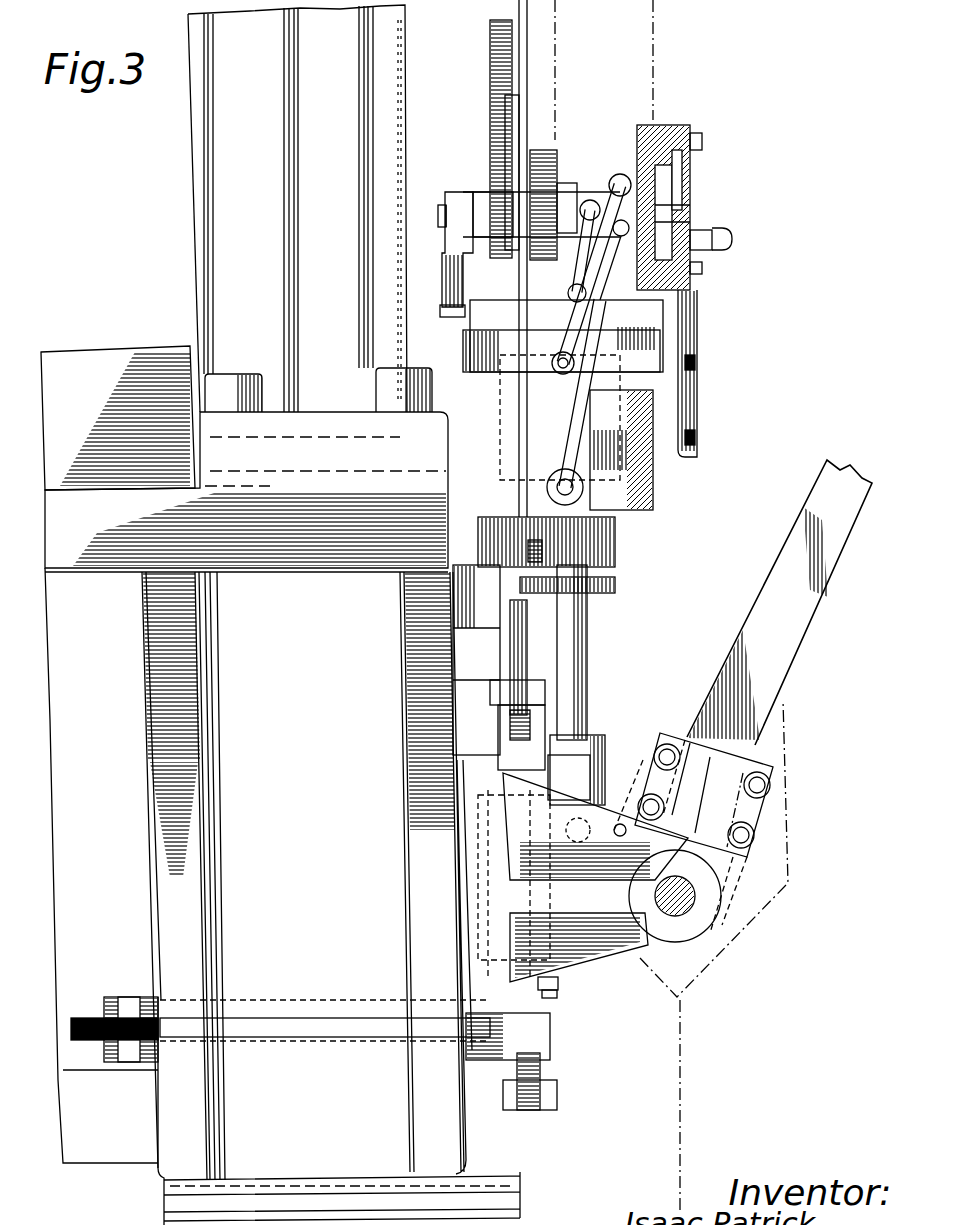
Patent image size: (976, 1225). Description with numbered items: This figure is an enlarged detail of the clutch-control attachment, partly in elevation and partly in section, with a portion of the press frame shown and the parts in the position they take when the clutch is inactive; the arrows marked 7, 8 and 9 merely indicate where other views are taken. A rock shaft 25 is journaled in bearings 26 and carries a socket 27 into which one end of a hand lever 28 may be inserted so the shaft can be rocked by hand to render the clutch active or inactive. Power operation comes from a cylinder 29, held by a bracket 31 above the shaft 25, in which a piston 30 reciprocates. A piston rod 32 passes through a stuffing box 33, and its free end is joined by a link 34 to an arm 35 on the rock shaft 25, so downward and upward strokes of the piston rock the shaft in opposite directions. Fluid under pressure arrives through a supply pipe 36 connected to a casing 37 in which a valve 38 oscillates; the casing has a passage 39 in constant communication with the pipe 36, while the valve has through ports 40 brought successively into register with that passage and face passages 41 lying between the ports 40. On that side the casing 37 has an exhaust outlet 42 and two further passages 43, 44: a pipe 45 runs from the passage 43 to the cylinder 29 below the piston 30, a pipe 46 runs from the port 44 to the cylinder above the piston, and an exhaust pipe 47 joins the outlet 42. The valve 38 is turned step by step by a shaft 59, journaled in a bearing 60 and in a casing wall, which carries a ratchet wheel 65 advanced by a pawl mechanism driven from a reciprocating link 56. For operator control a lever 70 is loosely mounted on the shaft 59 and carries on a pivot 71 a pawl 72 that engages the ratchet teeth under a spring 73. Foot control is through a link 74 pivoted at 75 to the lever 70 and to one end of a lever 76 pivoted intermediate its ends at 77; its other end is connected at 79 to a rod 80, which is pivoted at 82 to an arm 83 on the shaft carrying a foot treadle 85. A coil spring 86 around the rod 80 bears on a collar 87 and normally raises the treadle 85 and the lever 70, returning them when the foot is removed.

The section line 7- 7 is at (440, 222).
The section line 8- 8 is at (540, 19).
The section line 9- 9 is at (642, 32).
The rock shaft 25 is at (690, 905).
The bearings 26 is at (590, 960).
The socket 27 is at (775, 805).
The hand lever 28 is at (760, 640).
The cylinder 29 is at (540, 330).
The piston 30 is at (650, 430).
The bracket 31 is at (540, 838).
The piston rod 32 is at (587, 660).
The stuffing box 33 is at (615, 555).
The link 34 is at (600, 800).
The arm 35 is at (715, 1000).
The supply pipe 36 is at (727, 245).
The casing 37 is at (690, 170).
The valve 38 is at (650, 140).
The port or passage 39 is at (702, 270).
The ports 40 is at (690, 216).
The passages 41 is at (612, 175).
The exhaust outlet 42 is at (690, 200).
The passage 43 is at (605, 182).
The passage 44 is at (600, 300).
The pipe 45 is at (590, 200).
The pipe 46 is at (520, 345).
The exhaust pipe 47 is at (570, 265).
The bar or link 56 is at (528, 68).
The shaft 59 is at (438, 213).
The bearing 60 is at (444, 232).
The ratchet wheel 65 is at (490, 215).
The lever 70 is at (492, 100).
The pivot 71 is at (570, 150).
The pawl 72 is at (545, 150).
The spring 73 is at (500, 195).
The link 74 is at (505, 190).
The pivot connection 75 is at (512, 140).
The lever 76 is at (465, 610).
The pivot 77 is at (540, 645).
The pivot connection 79 is at (545, 692).
The rod 80 is at (300, 1018).
The pivot connection 82 is at (560, 1098).
The arm 83 is at (545, 1072).
The foot treadle 85 is at (100, 1018).
The coil spring 86 is at (560, 985).
The collar or shoulder 87 is at (552, 1000).